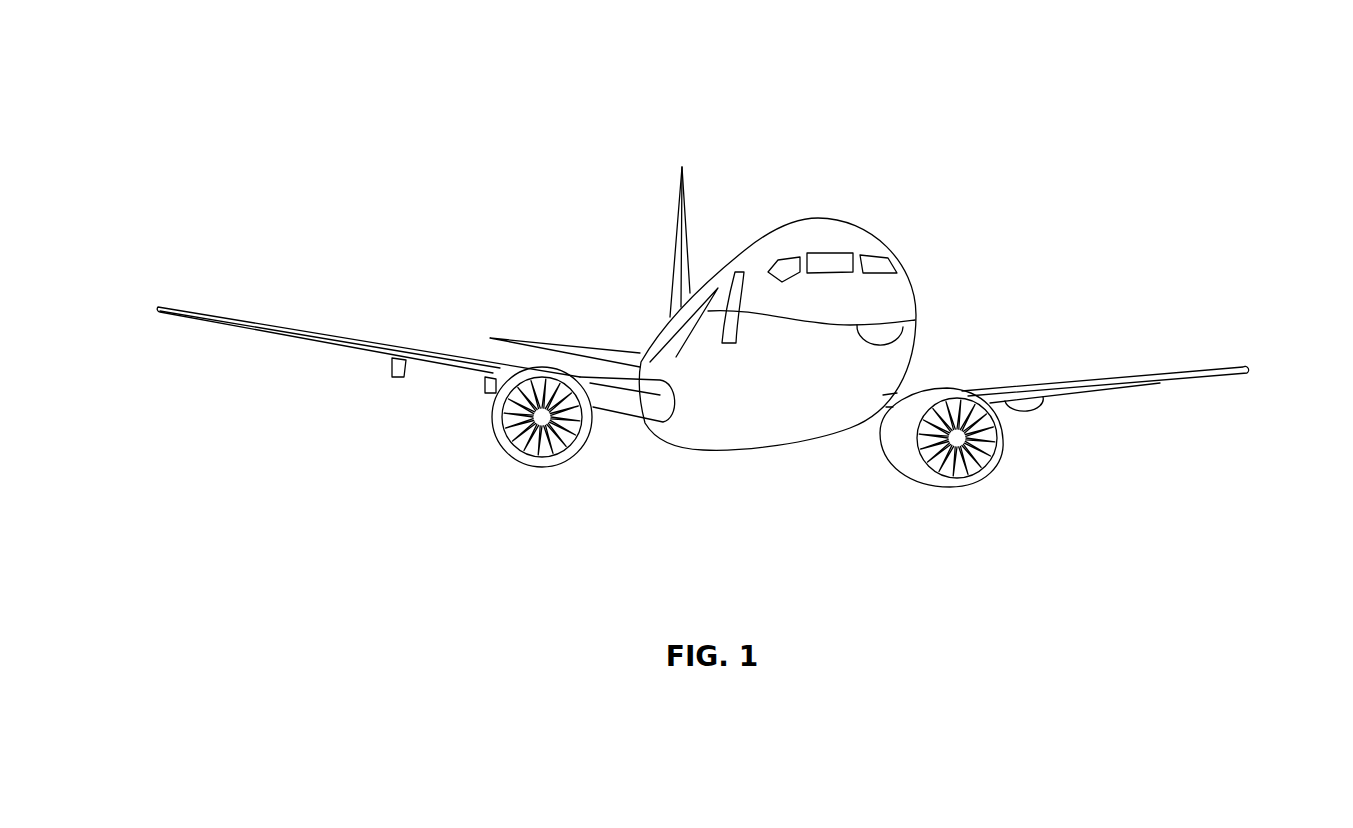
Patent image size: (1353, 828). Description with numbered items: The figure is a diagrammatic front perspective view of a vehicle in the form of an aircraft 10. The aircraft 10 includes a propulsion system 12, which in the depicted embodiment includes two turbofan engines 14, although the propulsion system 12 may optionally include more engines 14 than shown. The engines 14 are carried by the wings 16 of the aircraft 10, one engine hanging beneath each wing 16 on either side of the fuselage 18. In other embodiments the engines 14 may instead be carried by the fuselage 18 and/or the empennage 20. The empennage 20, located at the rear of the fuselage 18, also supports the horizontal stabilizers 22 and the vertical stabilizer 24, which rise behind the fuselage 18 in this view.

The aircraft 10 is at (431, 108).
The propulsion system 12 is at (1060, 478).
The turbofan engines 14 is at (537, 469).
The wings 16 is at (301, 332).
The fuselage 18 is at (918, 288).
The empennage 20 is at (667, 320).
The horizontal stabilizers 22 is at (532, 342).
The vertical stabilizer 24 is at (680, 208).